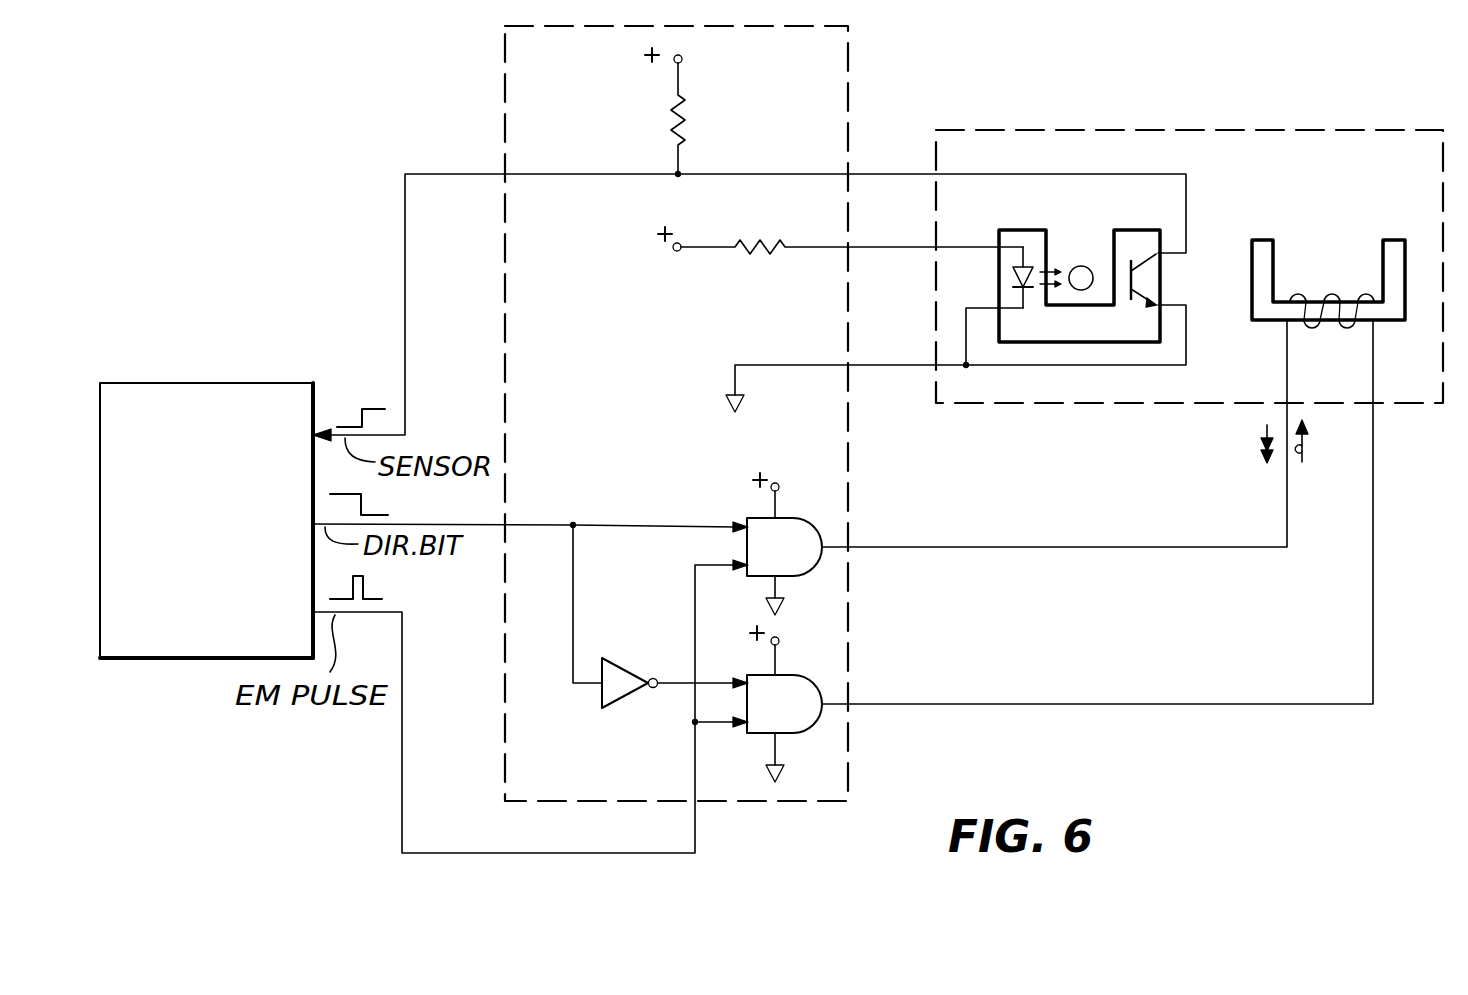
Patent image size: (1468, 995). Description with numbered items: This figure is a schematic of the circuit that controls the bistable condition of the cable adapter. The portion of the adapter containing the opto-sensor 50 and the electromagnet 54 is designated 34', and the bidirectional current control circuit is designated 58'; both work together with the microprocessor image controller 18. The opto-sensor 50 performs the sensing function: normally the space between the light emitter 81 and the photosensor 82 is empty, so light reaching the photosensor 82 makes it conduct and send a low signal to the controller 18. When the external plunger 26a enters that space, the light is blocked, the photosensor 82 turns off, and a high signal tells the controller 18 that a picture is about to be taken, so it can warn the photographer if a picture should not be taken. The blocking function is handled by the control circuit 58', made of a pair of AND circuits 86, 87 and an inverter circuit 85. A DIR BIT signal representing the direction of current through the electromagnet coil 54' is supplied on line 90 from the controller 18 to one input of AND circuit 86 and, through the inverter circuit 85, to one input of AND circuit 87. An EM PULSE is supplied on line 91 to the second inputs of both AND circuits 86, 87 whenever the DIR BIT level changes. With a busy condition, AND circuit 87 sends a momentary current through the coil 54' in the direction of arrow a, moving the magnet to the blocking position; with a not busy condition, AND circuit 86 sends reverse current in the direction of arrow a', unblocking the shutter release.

The microprocessor image controller 18 is at (197, 385).
The bidirectional current control circuit 58' is at (603, 413).
The adapter portion 34' is at (1189, 227).
The external plunger 26a is at (1082, 265).
The light emitter 81 is at (1000, 281).
The photosensor 82 is at (1183, 280).
The opto-sensor 50 is at (1098, 337).
The electromagnet 54 is at (1336, 312).
The electromagnet coil 54' is at (1332, 264).
The DIR BIT line 90 is at (535, 523).
The inverter circuit 85 is at (622, 675).
The AND circuit 86 is at (795, 525).
The AND circuit 87 is at (800, 690).
The EM PULSE line 91 is at (404, 762).
The arrow a is at (1231, 440).
The arrow a' is at (1329, 440).